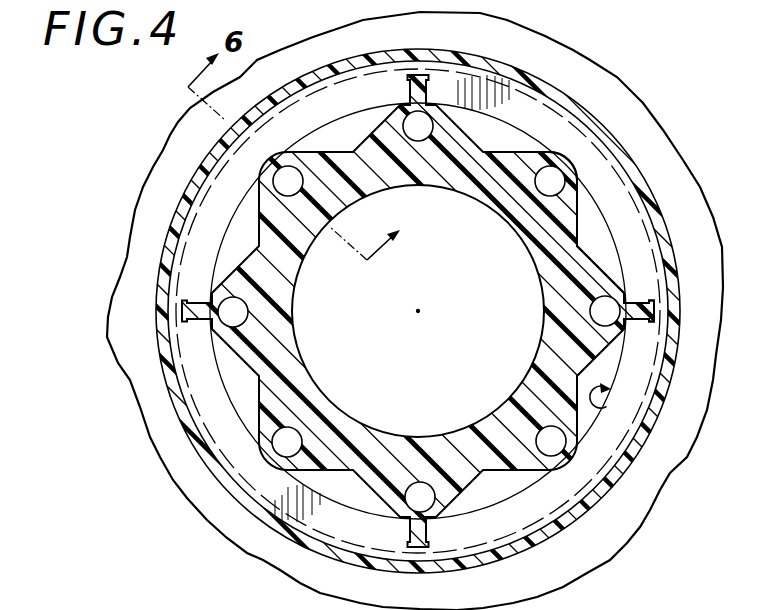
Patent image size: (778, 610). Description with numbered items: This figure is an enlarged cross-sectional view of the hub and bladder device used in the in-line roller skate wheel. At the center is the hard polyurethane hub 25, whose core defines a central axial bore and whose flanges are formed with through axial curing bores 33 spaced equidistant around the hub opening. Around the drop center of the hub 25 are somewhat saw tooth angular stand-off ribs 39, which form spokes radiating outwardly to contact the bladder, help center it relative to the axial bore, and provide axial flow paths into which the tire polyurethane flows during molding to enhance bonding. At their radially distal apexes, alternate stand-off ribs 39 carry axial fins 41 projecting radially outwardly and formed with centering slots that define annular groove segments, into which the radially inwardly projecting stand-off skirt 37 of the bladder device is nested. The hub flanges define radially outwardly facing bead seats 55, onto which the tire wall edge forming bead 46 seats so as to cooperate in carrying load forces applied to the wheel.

The hub 25 is at (588, 457).
The axial curing bores 33 is at (285, 182).
The stand-off skirt 37 is at (585, 428).
The stand-off ribs 39 is at (571, 167).
The axial fins 41 is at (657, 303).
The bead 46 is at (586, 229).
The bead seats 55 is at (630, 362).